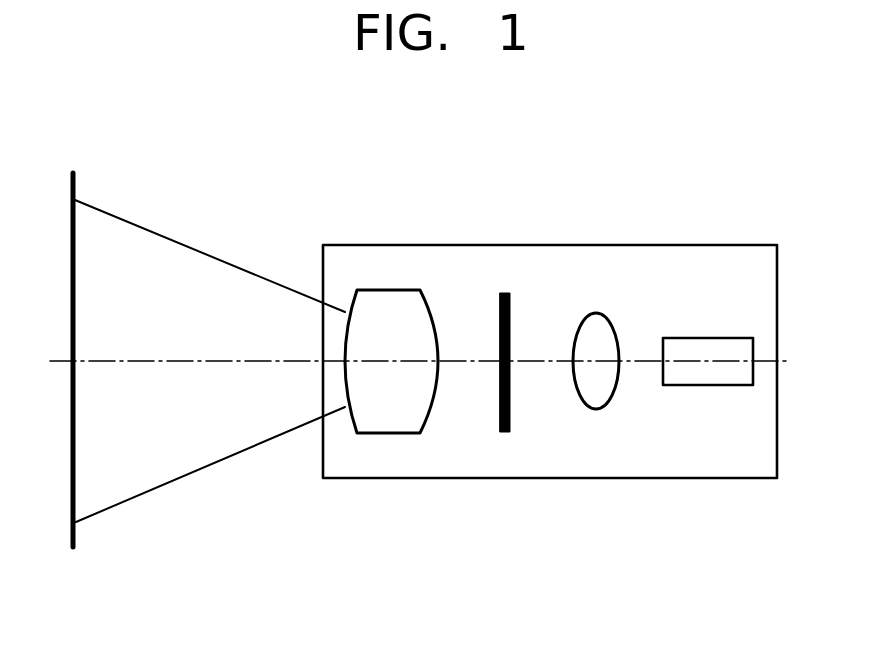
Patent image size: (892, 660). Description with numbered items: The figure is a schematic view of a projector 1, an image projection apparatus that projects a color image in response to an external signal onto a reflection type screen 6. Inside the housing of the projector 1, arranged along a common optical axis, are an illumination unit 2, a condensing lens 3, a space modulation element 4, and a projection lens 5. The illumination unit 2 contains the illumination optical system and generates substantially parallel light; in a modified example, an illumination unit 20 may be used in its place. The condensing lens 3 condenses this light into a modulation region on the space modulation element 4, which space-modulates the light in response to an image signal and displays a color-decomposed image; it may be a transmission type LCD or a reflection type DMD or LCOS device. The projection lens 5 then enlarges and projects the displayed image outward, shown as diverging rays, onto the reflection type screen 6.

The projector 1 is at (558, 237).
The illumination unit 2 is at (710, 338).
The illumination unit 20 is at (708, 361).
The condensing lens 3 is at (612, 328).
The space modulation element 4 is at (509, 308).
The projection lens 5 is at (432, 310).
The reflection type screen 6 is at (76, 533).